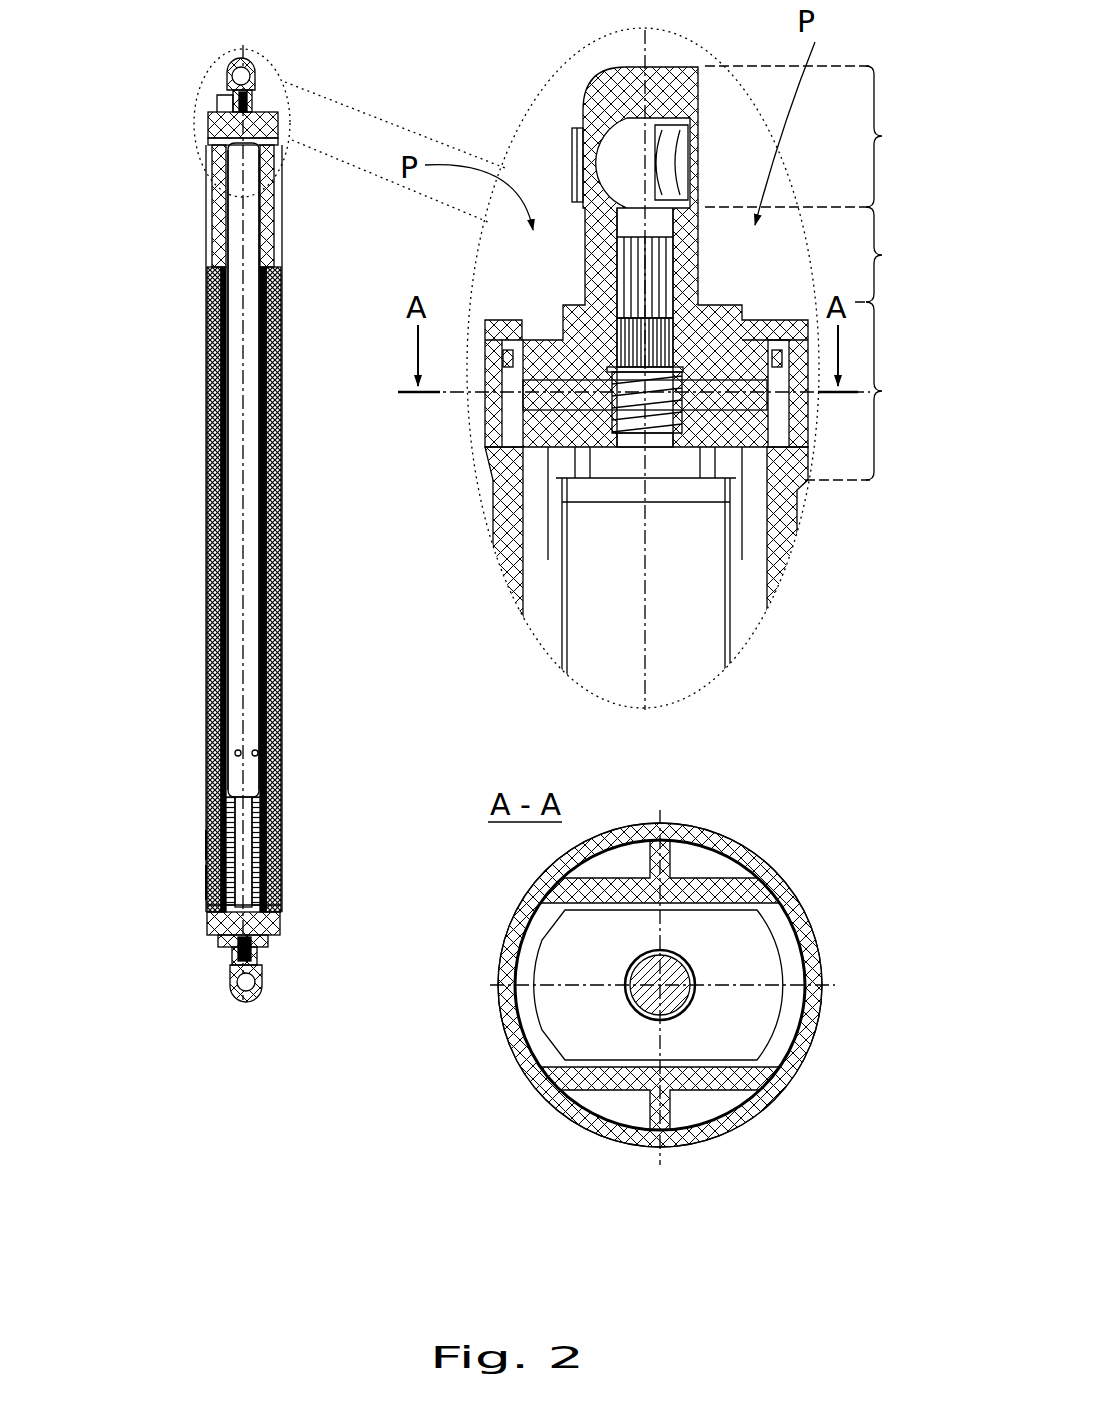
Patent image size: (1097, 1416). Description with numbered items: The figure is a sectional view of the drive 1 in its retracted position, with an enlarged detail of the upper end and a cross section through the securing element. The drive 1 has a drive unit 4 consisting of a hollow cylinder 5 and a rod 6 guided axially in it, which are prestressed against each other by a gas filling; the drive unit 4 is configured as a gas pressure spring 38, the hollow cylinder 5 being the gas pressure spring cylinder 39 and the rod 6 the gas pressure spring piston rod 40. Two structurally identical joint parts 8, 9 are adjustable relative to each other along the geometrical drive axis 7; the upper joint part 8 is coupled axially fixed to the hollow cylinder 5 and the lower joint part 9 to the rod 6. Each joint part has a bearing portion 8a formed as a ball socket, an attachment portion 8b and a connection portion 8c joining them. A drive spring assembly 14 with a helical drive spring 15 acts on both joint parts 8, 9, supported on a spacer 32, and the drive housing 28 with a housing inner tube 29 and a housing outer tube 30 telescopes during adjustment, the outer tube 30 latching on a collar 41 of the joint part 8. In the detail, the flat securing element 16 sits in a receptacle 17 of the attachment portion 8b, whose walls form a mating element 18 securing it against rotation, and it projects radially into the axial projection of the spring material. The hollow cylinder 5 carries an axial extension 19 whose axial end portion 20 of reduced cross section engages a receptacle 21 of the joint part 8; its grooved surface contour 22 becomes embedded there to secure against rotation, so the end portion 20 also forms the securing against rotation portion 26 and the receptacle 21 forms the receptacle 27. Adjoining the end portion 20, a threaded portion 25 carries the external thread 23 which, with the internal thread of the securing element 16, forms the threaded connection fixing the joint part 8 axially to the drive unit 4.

The drive 1 is at (185, 410).
The drive unit 4 is at (162, 471).
The hollow cylinder 5 is at (400, 470).
The rod 6 is at (163, 849).
The geometrical drive axis 7 is at (243, 45).
The joint part 8 is at (230, 100).
The bearing portion 8a is at (816, 136).
The attachment portion 8b is at (866, 391).
The connection portion 8c is at (890, 254).
The joint part 9 is at (232, 965).
The drive spring assembly 14 is at (165, 589).
The drive spring 15 is at (212, 455).
The securing element 16 is at (207, 135).
The receptacle 17 is at (532, 932).
The mating element 18 is at (580, 1062).
The axial extension 19 is at (592, 396).
The axial end portion 20 is at (495, 285).
The receptacle 21 is at (495, 206).
The surface contour 22 is at (683, 330).
The external thread 23 is at (690, 400).
The threaded portion 25 is at (690, 432).
The securing against rotation portion 26 is at (612, 340).
The receptacle 27 is at (612, 262).
The drive housing 28 is at (172, 893).
The housing inner tube 29 is at (203, 897).
The housing outer tube 30 is at (205, 840).
The spacer 32 is at (215, 190).
The gas pressure spring 38 is at (207, 800).
The gas pressure spring cylinder 39 is at (210, 570).
The gas pressure spring piston rod 40 is at (222, 820).
The collar 41 is at (705, 318).